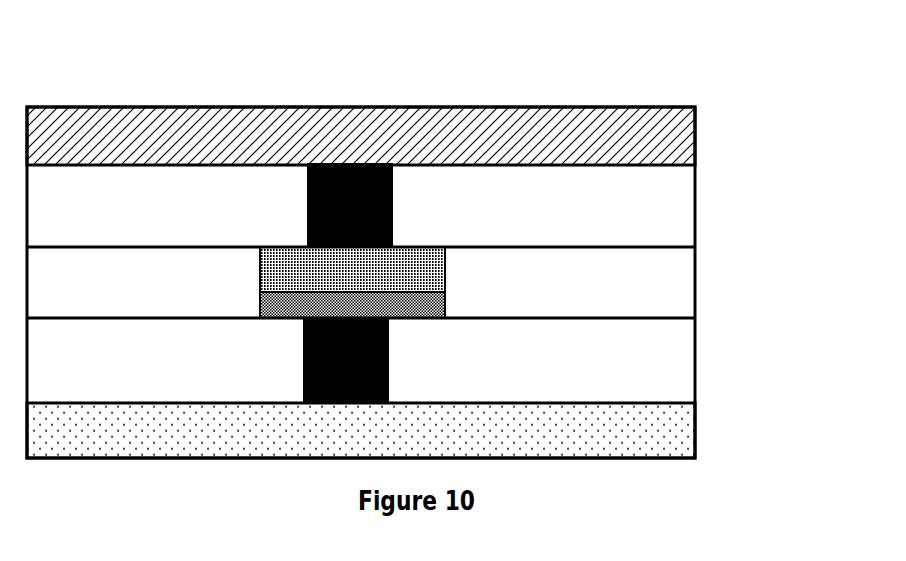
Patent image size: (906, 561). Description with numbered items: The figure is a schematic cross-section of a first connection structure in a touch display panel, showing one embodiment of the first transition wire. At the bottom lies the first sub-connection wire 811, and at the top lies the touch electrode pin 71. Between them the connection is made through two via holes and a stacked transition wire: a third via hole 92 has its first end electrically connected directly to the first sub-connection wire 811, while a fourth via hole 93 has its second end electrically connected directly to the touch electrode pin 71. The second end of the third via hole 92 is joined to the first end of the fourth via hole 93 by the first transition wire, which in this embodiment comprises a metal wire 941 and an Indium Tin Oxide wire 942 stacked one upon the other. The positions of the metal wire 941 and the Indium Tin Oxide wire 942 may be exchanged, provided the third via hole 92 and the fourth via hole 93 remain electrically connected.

The touch electrode pin 71 is at (527, 136).
The first sub-connection wire 811 is at (193, 415).
The third via hole 92 is at (389, 372).
The fourth via hole 93 is at (393, 216).
The metal wire 941 is at (445, 263).
The Indium Tin Oxide wire 942 is at (445, 304).